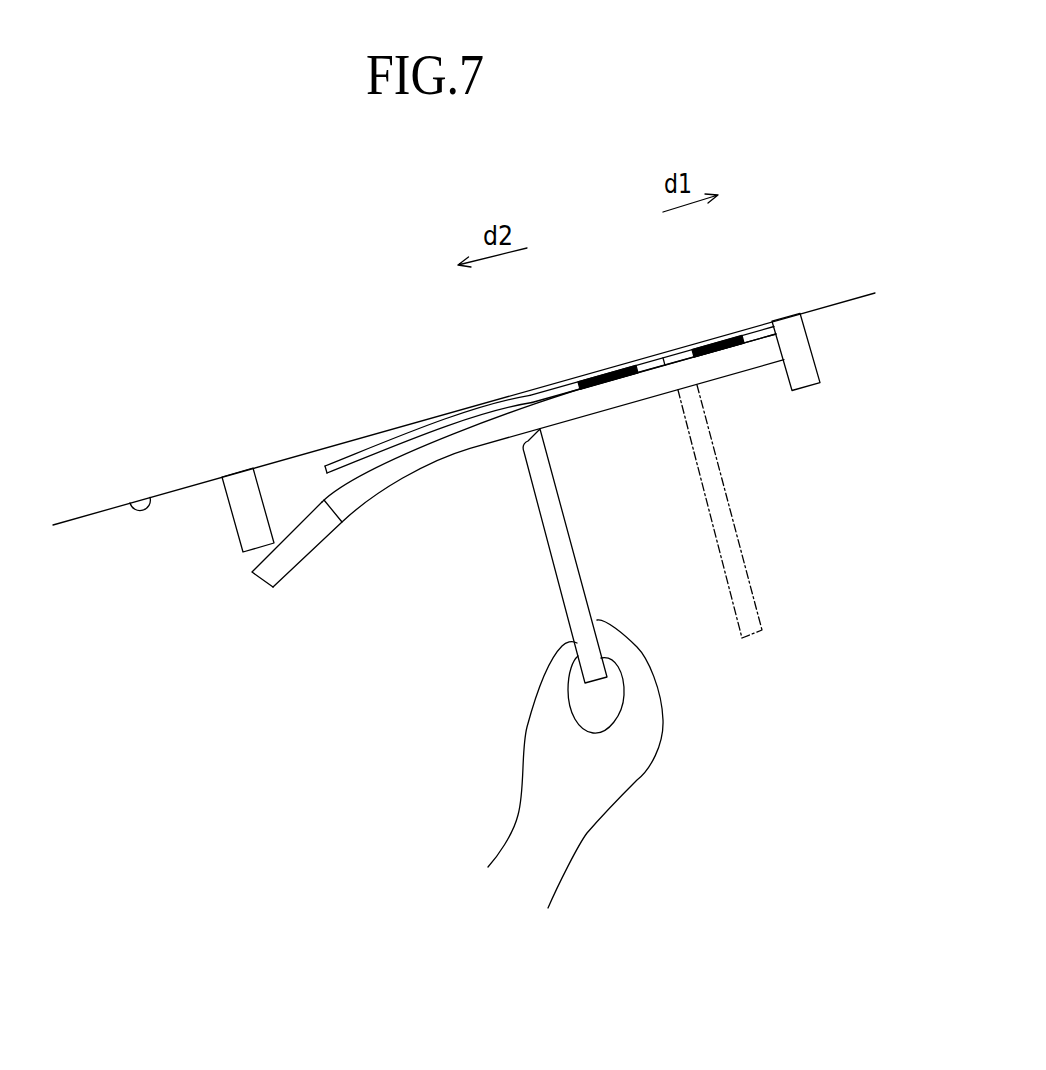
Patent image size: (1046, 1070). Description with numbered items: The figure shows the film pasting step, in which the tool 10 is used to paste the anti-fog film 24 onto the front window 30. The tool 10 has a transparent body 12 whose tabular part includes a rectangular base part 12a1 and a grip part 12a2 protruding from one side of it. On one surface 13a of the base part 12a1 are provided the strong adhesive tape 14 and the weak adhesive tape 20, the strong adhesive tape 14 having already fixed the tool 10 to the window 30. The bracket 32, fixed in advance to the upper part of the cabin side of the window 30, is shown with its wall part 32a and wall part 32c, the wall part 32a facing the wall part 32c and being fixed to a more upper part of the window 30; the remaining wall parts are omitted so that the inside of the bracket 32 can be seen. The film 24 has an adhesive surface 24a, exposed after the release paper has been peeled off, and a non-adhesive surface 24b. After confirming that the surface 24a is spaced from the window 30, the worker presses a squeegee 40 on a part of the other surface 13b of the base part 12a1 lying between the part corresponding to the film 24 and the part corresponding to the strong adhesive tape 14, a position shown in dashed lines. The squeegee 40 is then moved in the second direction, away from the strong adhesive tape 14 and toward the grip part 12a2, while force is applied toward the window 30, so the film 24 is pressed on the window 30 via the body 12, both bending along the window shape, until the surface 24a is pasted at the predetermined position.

The tool 10 is at (257, 615).
The body 12 is at (518, 506).
The base part 12a1 is at (458, 452).
The grip part 12a2 is at (284, 558).
The surface of the base part 13a is at (577, 382).
The other surface of the base part 13b is at (588, 387).
The strong adhesive tape 14 is at (716, 363).
The weak adhesive tape 20 is at (635, 387).
The film 24 is at (429, 445).
The surface of the film 24a is at (418, 429).
The other surface of the film 24b is at (383, 452).
The front window 30 is at (131, 503).
The bracket 32 is at (507, 404).
The wall part 32a is at (796, 335).
The wall part 32c is at (240, 490).
The squeegee 40 is at (568, 593).